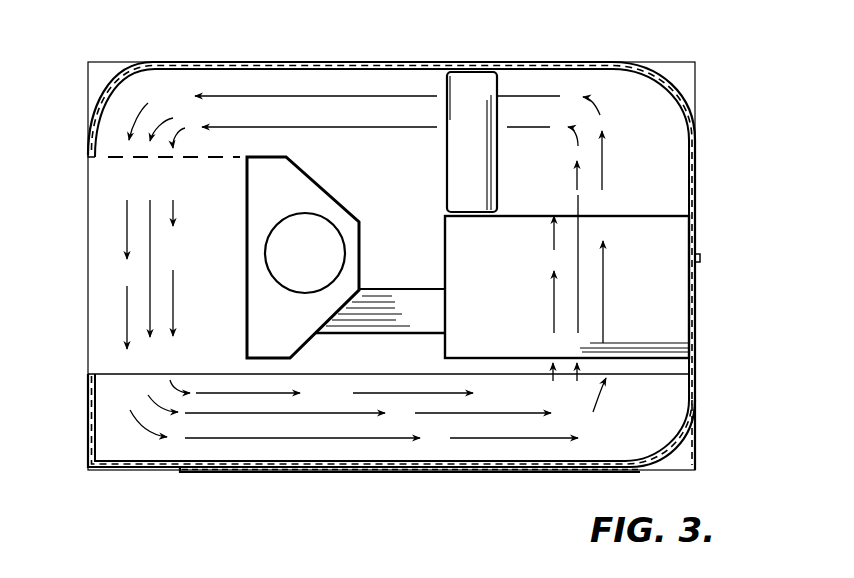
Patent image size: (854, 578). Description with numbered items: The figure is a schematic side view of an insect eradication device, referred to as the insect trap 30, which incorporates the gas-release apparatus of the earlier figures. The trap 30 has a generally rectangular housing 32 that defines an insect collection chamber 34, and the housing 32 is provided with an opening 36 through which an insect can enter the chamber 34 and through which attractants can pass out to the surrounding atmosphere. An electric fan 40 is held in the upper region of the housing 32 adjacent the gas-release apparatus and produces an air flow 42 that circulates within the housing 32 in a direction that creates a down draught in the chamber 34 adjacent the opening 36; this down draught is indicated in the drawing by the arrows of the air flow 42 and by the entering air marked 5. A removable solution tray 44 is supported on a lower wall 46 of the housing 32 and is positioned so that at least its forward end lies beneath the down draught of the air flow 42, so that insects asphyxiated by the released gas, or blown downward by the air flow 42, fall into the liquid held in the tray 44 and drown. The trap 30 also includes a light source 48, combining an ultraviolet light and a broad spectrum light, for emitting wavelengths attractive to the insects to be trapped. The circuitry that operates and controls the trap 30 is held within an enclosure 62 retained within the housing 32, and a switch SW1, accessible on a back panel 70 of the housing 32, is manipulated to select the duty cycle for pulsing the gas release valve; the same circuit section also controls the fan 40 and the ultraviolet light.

The insect trap 30 is at (410, 268).
The housing 32 is at (576, 62).
The insect collection chamber 34 is at (228, 270).
The opening 36 is at (112, 185).
The cooling air flow 5 is at (115, 270).
The electric fan 40 is at (468, 120).
The air flow 42 is at (307, 95).
The solution tray 44 is at (90, 447).
The lower wall 46 is at (300, 472).
The light source 48 is at (344, 203).
The enclosure 62 is at (640, 228).
The back panel 70 is at (694, 96).
The switch SW1 is at (700, 258).